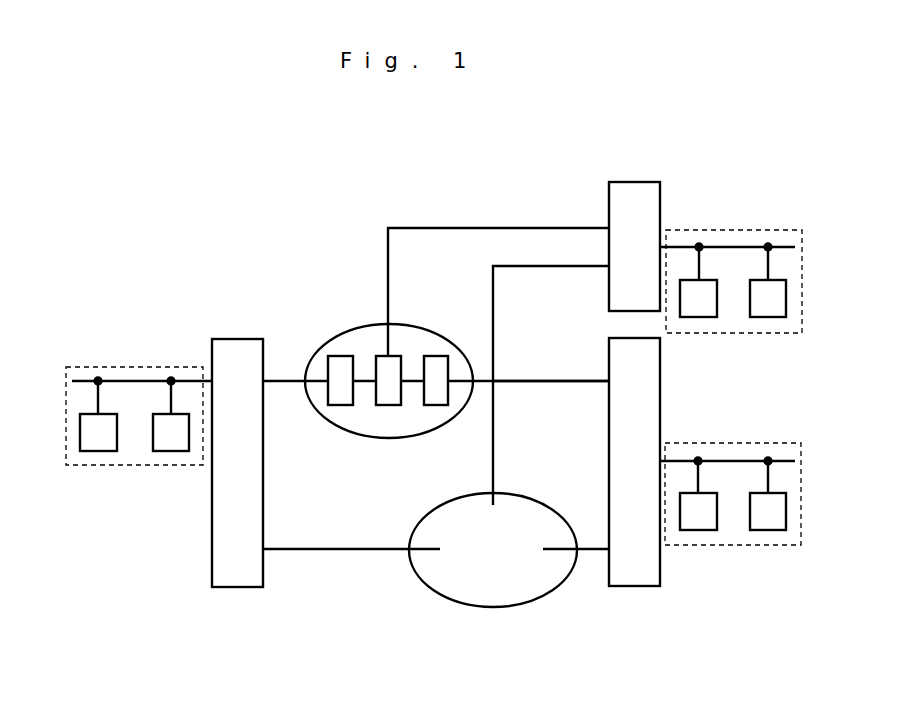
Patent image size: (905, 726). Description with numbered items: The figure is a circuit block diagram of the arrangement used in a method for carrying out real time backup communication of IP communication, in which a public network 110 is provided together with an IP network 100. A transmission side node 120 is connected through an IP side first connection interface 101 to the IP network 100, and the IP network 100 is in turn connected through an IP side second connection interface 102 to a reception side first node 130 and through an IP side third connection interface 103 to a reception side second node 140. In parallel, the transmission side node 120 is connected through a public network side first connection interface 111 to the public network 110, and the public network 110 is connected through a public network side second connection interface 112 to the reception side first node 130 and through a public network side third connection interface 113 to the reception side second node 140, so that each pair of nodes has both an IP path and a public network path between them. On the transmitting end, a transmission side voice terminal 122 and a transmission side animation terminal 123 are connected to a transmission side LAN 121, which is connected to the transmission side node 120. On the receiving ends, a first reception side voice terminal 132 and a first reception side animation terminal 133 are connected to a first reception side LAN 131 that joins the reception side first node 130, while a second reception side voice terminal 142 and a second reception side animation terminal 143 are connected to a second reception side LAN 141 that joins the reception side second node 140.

The IP network 100 is at (389, 438).
The IP side first connection interface 101 is at (285, 380).
The IP side second connection interface 102 is at (577, 383).
The IP side third connection interface 103 is at (550, 227).
The public network 110 is at (496, 607).
The public network side first connection interface 111 is at (297, 545).
The public network side second connection interface 112 is at (590, 552).
The public network side third connection interface 113 is at (562, 267).
The transmission side node 120 is at (238, 588).
The transmission side LAN 121 is at (132, 380).
The transmission side voice terminal 122 is at (99, 452).
The transmission side animation terminal 123 is at (171, 452).
The reception side first node 130 is at (632, 588).
The first reception side LAN 131 is at (752, 458).
The first reception side voice terminal 132 is at (698, 531).
The first reception side animation terminal 133 is at (768, 531).
The reception side second node 140 is at (660, 186).
The second reception side LAN 141 is at (753, 245).
The second reception side voice terminal 142 is at (699, 318).
The second reception side animation terminal 143 is at (768, 318).